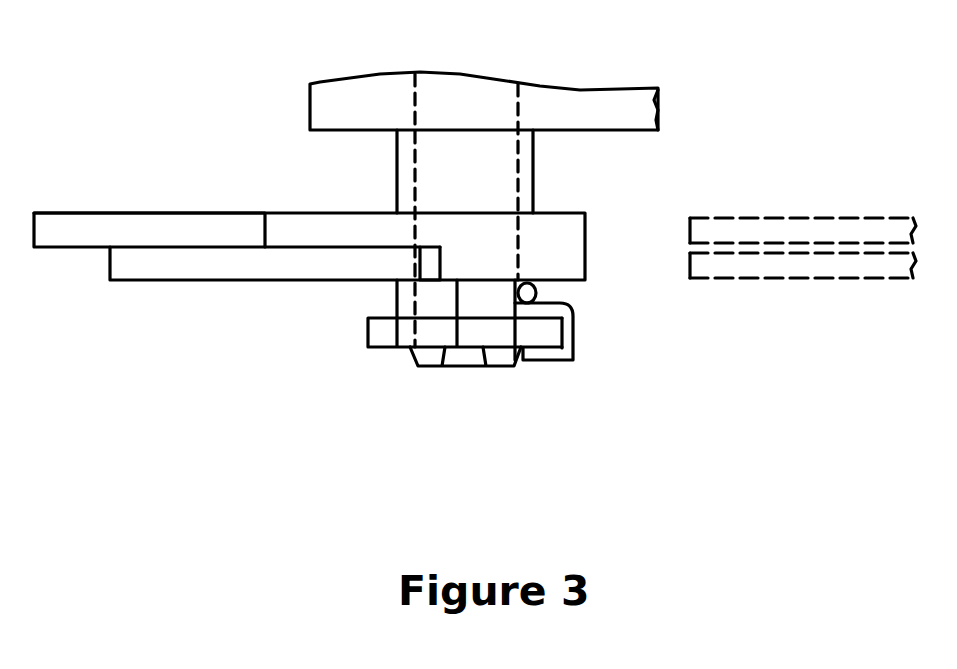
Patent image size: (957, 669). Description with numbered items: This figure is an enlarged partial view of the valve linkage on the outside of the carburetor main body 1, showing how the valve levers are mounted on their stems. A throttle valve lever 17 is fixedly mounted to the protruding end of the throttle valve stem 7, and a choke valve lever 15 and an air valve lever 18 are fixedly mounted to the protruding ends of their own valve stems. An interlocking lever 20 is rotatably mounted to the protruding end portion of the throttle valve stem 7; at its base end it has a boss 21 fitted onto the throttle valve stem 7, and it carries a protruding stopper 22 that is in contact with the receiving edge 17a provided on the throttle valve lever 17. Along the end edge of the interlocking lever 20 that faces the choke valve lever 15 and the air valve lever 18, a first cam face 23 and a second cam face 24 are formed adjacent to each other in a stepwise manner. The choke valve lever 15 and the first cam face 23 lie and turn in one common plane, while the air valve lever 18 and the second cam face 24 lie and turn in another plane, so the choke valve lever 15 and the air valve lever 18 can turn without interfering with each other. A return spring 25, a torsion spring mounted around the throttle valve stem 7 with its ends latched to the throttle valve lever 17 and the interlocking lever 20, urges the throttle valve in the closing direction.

The carburetor main body 1 is at (662, 104).
The throttle valve stem 7 is at (468, 78).
The choke valve lever 15 is at (798, 268).
The throttle valve lever 17 is at (370, 330).
The receiving edge 17a is at (487, 338).
The air valve lever 18 is at (800, 230).
The interlocking lever 20 is at (242, 281).
The boss 21 is at (537, 172).
The protruding stopper 22 is at (432, 370).
The first cam face 23 is at (224, 258).
The second cam face 24 is at (98, 218).
The return spring 25 is at (575, 333).